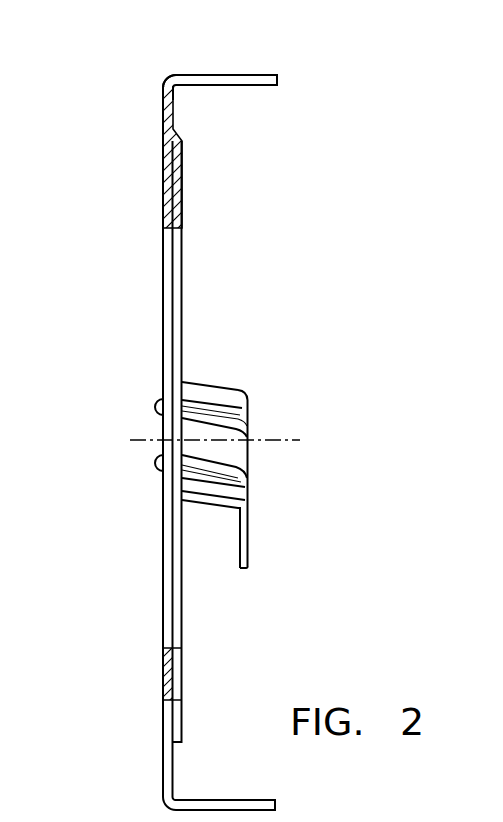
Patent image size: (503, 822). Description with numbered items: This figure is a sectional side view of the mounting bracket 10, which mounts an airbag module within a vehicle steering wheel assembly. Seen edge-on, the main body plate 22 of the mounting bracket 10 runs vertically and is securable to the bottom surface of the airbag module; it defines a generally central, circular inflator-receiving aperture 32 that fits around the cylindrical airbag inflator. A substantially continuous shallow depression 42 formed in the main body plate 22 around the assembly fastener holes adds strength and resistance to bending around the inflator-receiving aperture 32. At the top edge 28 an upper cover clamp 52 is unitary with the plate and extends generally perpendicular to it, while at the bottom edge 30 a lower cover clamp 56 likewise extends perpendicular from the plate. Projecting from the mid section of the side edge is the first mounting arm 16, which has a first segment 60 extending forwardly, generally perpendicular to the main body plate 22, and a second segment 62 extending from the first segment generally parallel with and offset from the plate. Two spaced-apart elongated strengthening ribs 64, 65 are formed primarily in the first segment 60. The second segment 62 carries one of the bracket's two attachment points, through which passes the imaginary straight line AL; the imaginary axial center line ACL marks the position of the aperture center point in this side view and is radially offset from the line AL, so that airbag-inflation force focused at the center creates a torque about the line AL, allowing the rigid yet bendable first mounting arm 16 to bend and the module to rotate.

The mounting bracket 10 is at (127, 69).
The main body plate 22 is at (158, 205).
The top edge 28 is at (168, 80).
The upper cover clamp 52 is at (258, 74).
The lower cover clamp 56 is at (258, 799).
The shallow depression 42 is at (163, 163).
The inflator-receiving aperture 32 is at (163, 231).
The bottom edge 30 is at (163, 705).
The first mounting arm 16 is at (235, 380).
The first segment 60 is at (187, 378).
The strengthening rib 64 is at (243, 412).
The strengthening rib 65 is at (245, 482).
The second segment 62 is at (252, 564).
The imaginary straight line AL is at (241, 532).
The imaginary axial center line ACL is at (283, 442).